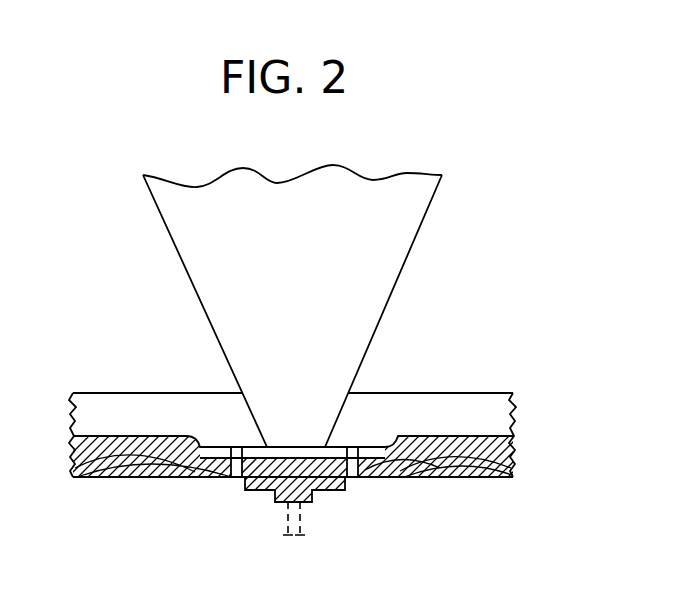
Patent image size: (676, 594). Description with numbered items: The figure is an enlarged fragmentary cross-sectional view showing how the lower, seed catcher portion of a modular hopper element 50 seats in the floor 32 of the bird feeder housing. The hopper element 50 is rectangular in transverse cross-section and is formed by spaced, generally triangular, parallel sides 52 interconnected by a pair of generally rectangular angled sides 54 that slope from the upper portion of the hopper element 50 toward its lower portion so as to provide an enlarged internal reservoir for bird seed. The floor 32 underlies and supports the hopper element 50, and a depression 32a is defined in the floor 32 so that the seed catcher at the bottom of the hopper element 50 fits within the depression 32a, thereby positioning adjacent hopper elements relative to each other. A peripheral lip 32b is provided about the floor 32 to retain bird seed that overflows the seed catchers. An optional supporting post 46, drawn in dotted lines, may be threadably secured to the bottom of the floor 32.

The floor 32 is at (315, 419).
The depression 32a is at (424, 435).
The peripheral lip 32b is at (482, 402).
The supporting post 46 is at (302, 519).
The hopper element 50 is at (340, 280).
The parallel sides 52 is at (395, 287).
The angled sides 54 is at (378, 197).